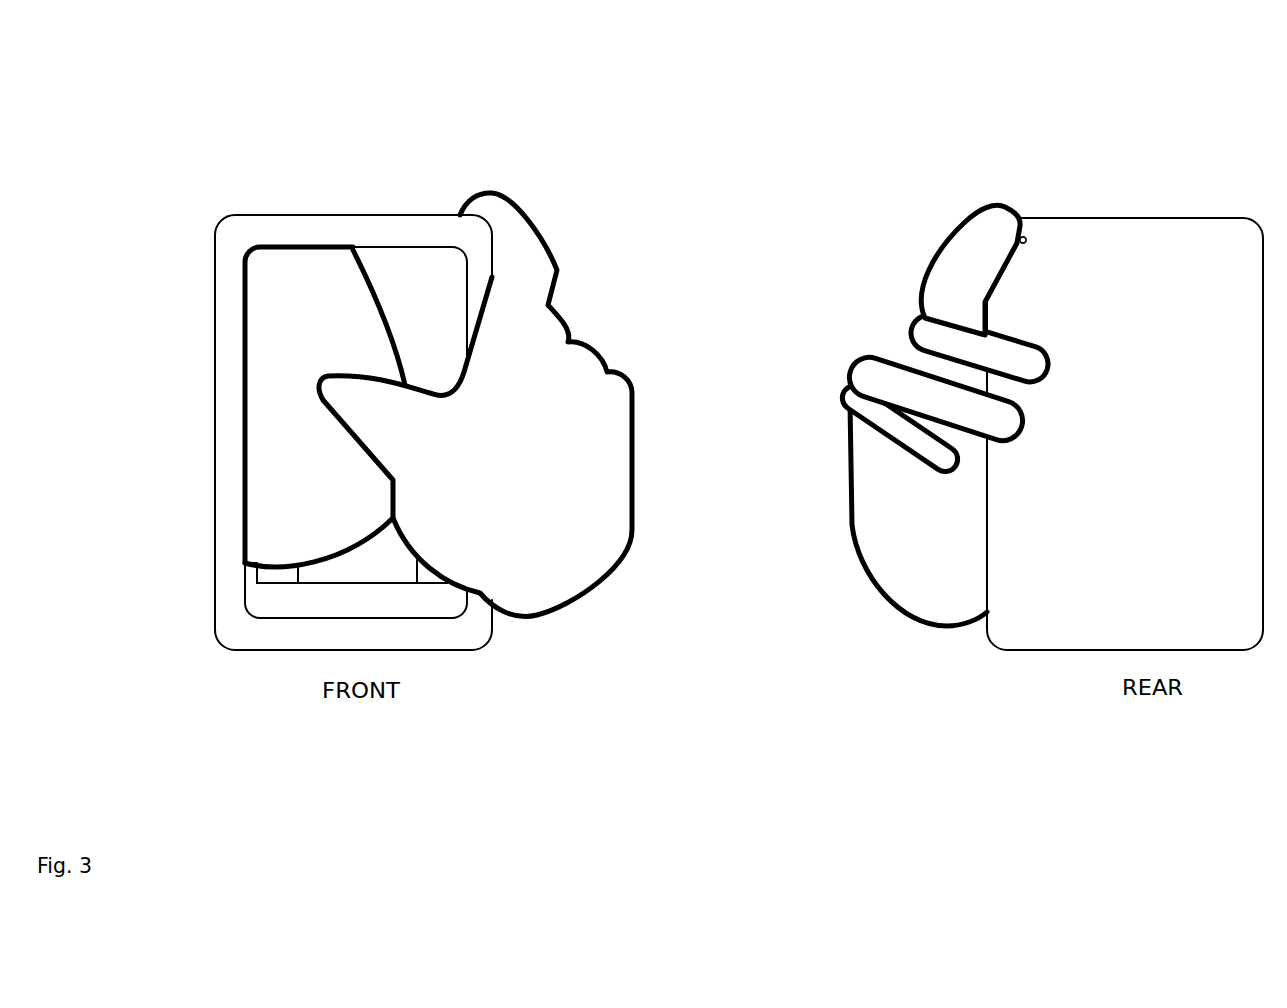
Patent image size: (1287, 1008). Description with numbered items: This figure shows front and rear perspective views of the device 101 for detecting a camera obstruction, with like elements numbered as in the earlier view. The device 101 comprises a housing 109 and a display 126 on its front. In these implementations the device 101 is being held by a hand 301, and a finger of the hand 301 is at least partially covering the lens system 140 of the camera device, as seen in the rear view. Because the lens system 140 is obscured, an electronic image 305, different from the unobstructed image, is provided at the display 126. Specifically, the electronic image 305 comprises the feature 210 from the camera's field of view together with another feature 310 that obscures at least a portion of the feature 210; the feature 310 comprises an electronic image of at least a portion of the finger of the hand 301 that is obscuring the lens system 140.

The device 101 is at (1118, 215).
The housing 109 is at (277, 649).
The electronic image 305 is at (263, 310).
The feature 310 is at (330, 477).
The display 126 is at (380, 612).
The feature 210 is at (273, 578).
The lens system 140 is at (1027, 238).
The hand 301 is at (537, 516).